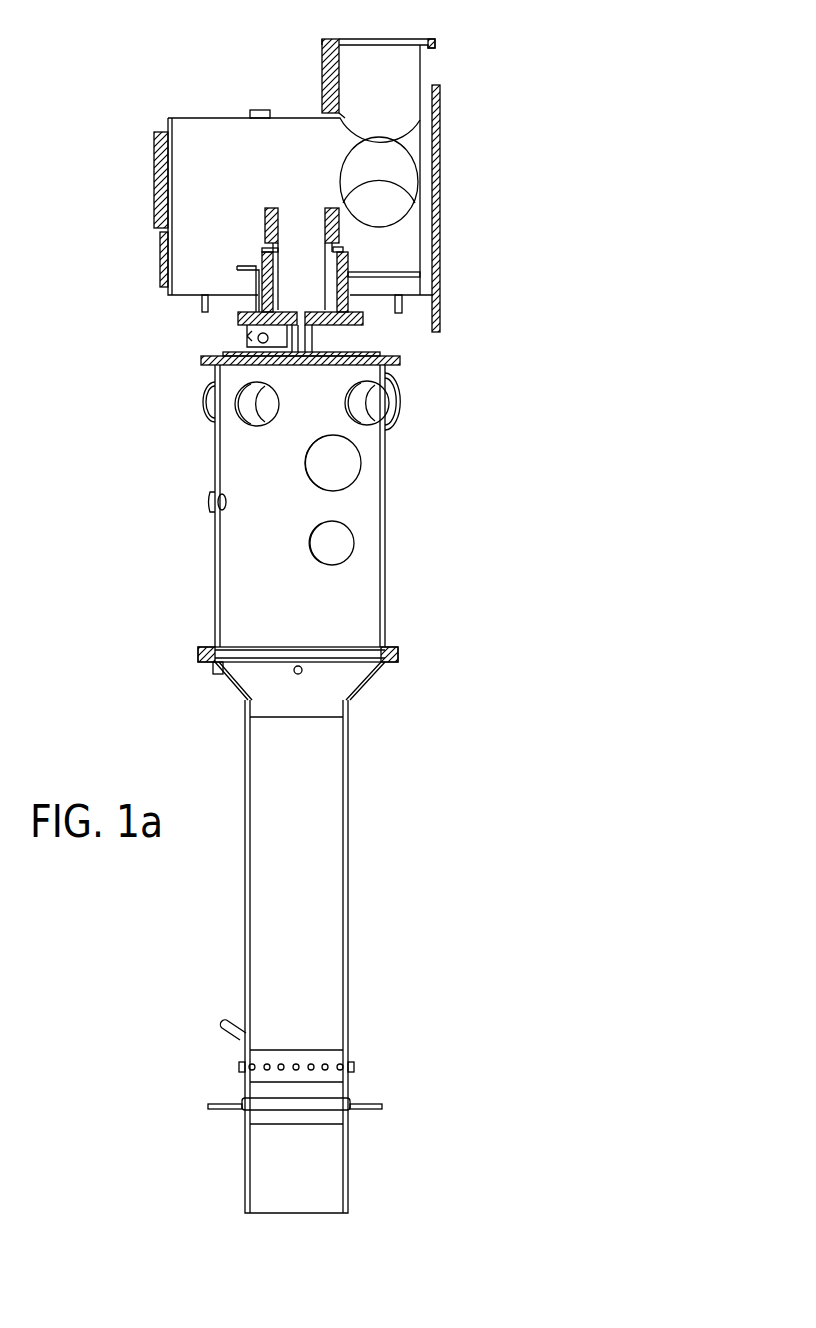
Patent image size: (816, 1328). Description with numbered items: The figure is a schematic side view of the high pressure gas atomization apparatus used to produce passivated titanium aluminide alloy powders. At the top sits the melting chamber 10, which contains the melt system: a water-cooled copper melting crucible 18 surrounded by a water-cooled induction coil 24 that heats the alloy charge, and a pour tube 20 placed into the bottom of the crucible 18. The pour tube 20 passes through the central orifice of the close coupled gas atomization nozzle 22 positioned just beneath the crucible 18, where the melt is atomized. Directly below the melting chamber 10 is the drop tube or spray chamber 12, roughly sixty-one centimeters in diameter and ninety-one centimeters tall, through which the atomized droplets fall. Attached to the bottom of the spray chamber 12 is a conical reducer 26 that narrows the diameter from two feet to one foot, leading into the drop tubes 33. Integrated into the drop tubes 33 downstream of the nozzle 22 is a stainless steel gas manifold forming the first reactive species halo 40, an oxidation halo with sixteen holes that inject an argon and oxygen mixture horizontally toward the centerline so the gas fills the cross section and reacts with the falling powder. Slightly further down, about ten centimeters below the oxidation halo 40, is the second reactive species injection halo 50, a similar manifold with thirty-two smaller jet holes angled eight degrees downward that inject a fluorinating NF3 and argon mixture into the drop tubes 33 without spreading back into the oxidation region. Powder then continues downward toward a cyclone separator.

The melting chamber 10 is at (188, 98).
The drop tube (spray chamber) 12 is at (193, 542).
The melting crucible 18 is at (260, 228).
The pour tube 20 is at (280, 334).
The close coupled gas atomization nozzle 22 is at (317, 369).
The water-cooled induction coil 24 is at (355, 265).
The conical reducer 26 is at (355, 695).
The drop tubes 33 is at (217, 932).
The first reactive species halo (oxidation halo) 40 is at (331, 1052).
The second reactive species injection halo (fluorination halo) 50 is at (337, 1113).